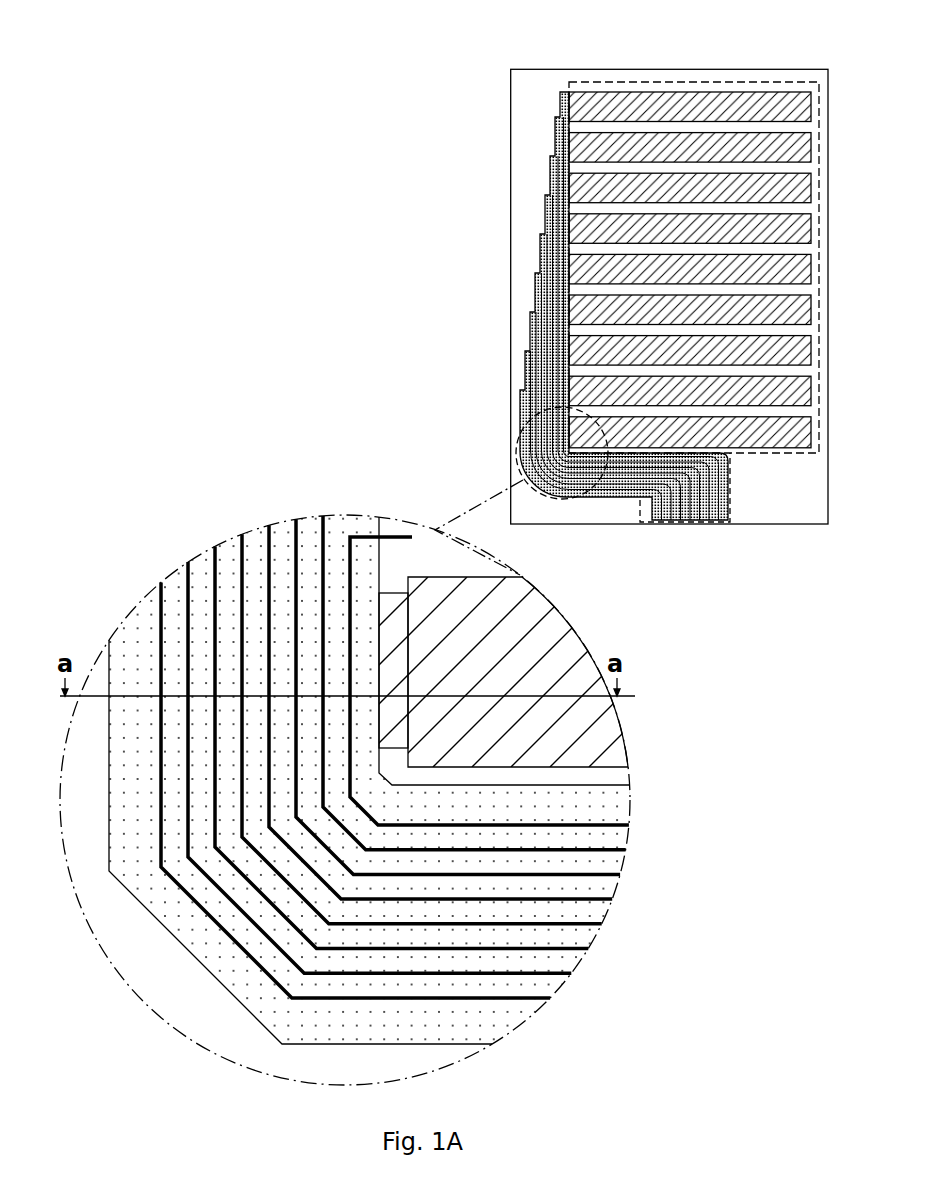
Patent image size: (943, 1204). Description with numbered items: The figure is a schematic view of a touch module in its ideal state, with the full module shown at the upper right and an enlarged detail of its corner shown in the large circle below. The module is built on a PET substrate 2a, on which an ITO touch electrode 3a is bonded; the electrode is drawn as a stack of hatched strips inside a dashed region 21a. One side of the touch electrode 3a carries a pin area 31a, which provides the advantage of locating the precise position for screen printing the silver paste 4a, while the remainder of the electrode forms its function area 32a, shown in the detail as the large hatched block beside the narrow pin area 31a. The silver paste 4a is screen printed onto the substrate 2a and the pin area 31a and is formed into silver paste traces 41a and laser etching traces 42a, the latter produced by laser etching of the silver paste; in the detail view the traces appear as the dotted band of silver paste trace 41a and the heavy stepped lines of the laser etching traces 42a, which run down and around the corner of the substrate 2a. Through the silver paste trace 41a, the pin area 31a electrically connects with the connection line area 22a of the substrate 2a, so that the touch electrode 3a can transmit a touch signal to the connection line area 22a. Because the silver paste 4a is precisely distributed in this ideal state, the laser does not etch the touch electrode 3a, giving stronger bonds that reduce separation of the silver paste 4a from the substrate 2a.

The PET substrate 2a is at (519, 86).
The sensing region 21a is at (695, 79).
The ITO touch electrode 3a is at (802, 107).
The silver paste 4a is at (532, 347).
The connection line area 22a is at (715, 521).
The pin area 31a is at (390, 603).
The function area 32a is at (525, 618).
The silver paste trace 41a is at (614, 812).
The laser etching trace 42a is at (610, 828).